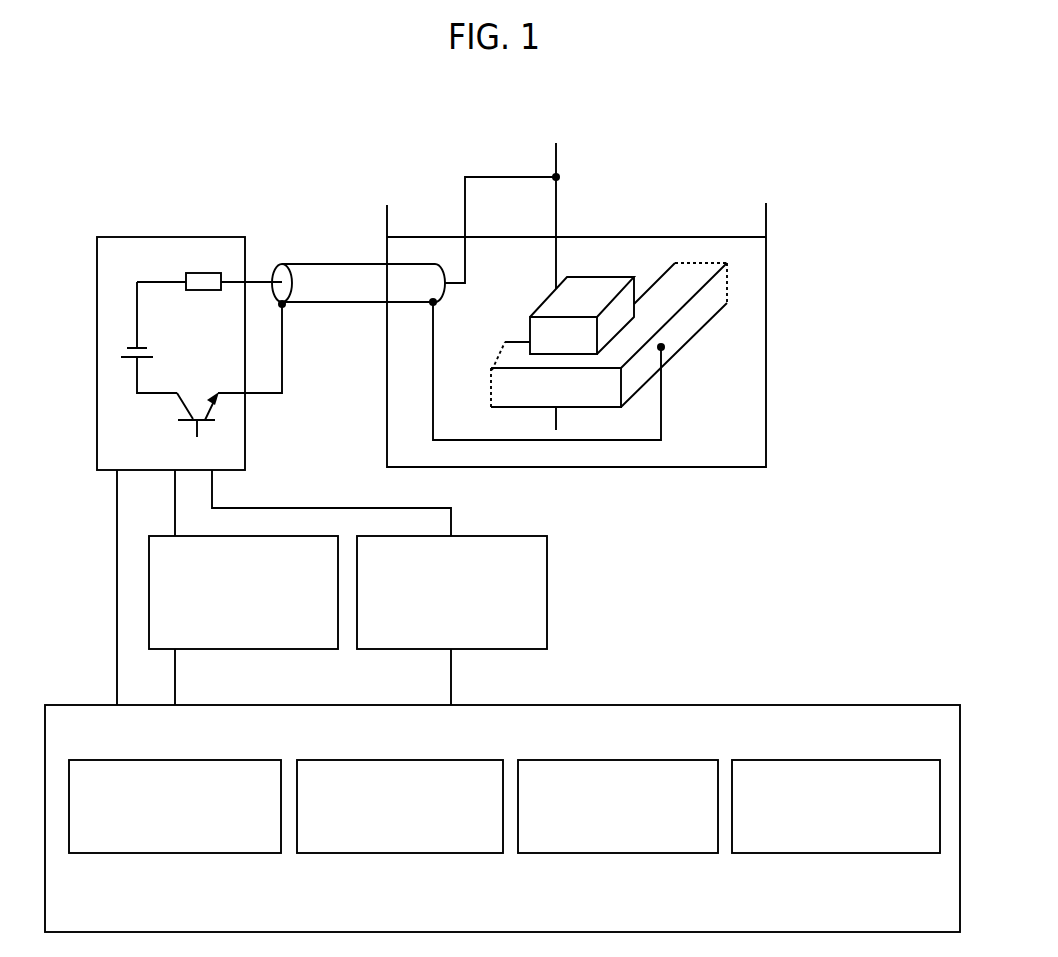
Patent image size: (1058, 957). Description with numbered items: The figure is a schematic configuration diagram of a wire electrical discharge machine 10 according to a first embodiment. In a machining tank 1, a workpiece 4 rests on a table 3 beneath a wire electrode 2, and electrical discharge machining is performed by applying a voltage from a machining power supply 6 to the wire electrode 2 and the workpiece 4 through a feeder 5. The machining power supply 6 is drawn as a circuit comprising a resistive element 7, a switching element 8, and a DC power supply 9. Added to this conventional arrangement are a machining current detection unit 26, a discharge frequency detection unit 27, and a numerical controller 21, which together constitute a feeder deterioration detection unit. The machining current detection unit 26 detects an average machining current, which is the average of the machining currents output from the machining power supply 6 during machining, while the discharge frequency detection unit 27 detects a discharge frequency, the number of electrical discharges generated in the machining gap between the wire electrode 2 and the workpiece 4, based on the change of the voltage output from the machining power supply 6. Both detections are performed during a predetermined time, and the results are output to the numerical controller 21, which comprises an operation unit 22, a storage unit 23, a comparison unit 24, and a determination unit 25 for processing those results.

The machining tank 1 is at (767, 327).
The wire electrode 2 is at (558, 220).
The table 3 is at (609, 335).
The workpiece 4 is at (582, 315).
The feeder 5 is at (466, 308).
The machining power supply 6 is at (130, 237).
The resistive element 7 is at (206, 274).
The switching element 8 is at (196, 420).
The DC power supply 9 is at (145, 356).
The wire electrical discharge machine 10 is at (104, 170).
The numerical controller 21 is at (892, 704).
The operation unit 22 is at (143, 760).
The storage unit 23 is at (383, 760).
The comparison unit 24 is at (616, 760).
The determination unit 25 is at (855, 759).
The machining current detection unit 26 is at (247, 651).
The discharge frequency detection unit 27 is at (476, 650).